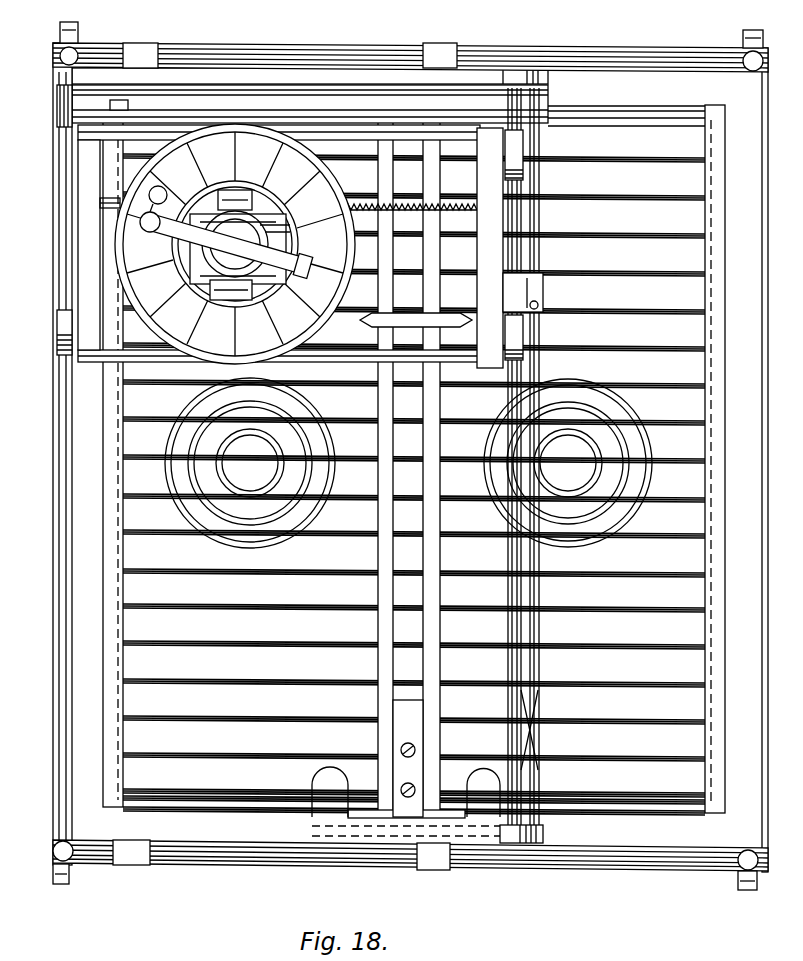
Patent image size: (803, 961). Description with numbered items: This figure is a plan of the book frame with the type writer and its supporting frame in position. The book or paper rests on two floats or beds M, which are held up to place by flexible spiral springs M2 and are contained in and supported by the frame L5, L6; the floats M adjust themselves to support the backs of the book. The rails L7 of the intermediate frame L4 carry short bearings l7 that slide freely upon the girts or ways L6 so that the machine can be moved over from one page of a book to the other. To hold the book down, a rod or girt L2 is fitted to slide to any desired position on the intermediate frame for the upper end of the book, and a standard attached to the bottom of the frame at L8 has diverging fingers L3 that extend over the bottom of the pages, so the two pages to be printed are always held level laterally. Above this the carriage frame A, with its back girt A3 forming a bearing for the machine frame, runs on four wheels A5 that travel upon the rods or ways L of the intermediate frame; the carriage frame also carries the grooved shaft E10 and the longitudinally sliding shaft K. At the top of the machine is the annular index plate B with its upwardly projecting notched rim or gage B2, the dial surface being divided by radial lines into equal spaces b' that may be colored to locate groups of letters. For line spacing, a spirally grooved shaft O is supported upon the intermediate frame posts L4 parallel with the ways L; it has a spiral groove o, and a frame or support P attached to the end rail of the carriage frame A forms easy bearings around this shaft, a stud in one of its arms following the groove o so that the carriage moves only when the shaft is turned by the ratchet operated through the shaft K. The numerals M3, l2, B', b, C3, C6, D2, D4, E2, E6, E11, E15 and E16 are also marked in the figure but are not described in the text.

The rods or ways L is at (505, 665).
The rod or girt L2 is at (265, 112).
The diverging fingers L3 is at (388, 815).
The intermediate frame posts L4 is at (550, 84).
The frame L5 is at (708, 30).
The girts or ways L6 is at (364, 46).
The rails L7 is at (472, 72).
The attachment of standard to frame bottom L8 is at (408, 758).
The short bearings l7 is at (290, 55).
The clamp block l2 is at (281, 855).
The floats or beds M is at (110, 464).
The flexible spiral springs M2 is at (414, 460).
The coil spring M3 is at (225, 540).
The carriage frame A is at (290, 248).
The back girt A3 is at (340, 110).
The wheels A5 is at (56, 147).
The index plate B is at (216, 244).
The wheel rim B' is at (115, 247).
The rim or gage B2 is at (244, 188).
The rim b is at (236, 243).
The equal spaces b' is at (235, 244).
The hub C3 is at (238, 247).
The lever end C6 is at (98, 203).
The lever D2 is at (227, 245).
The pivot pin D4 is at (163, 209).
The block E2 is at (231, 307).
The slide E6 is at (275, 223).
The shaft E10 is at (420, 305).
The part E11 is at (189, 312).
The part E15 is at (163, 286).
The part E16 is at (279, 312).
The longitudinally sliding shaft K is at (440, 218).
The frame or support P is at (545, 295).
The spirally grooved shaft O is at (542, 588).
The spiral groove o is at (539, 712).